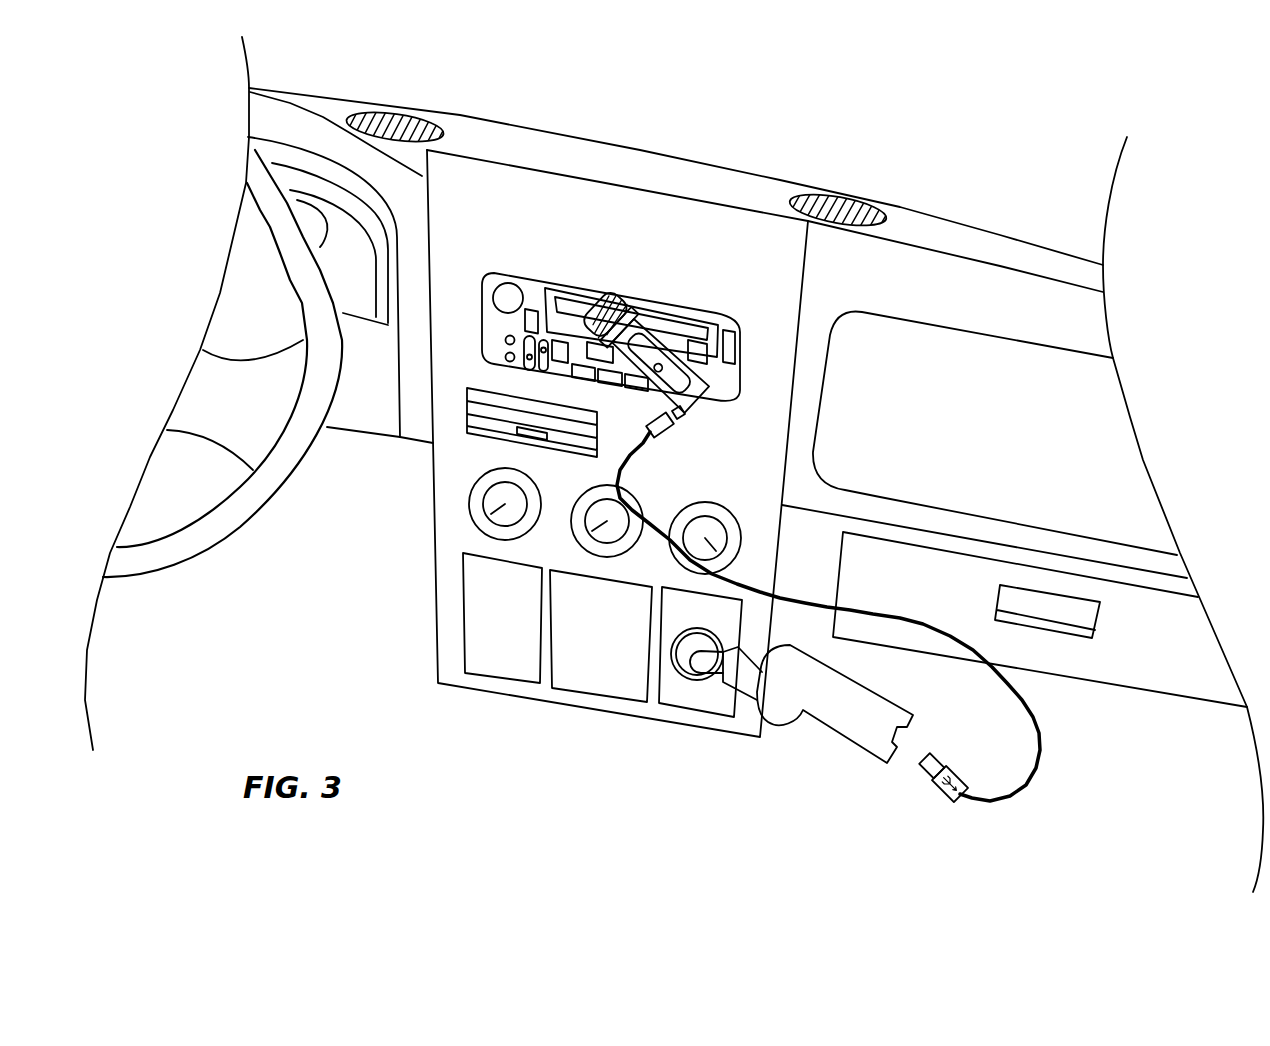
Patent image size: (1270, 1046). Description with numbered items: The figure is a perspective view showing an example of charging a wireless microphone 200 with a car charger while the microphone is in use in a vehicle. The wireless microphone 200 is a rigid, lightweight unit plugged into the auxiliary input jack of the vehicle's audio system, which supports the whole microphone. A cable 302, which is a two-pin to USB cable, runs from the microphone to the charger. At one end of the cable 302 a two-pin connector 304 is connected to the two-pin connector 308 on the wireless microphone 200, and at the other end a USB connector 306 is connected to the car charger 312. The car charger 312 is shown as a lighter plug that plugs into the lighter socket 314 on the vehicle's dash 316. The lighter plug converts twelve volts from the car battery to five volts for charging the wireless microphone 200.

The wireless microphone 200 is at (628, 316).
The cable 302 is at (1030, 797).
The two-pin connector 304 is at (668, 435).
The USB connector 306 is at (938, 797).
The two-pin connector 308 is at (677, 419).
The car charger 312 is at (897, 740).
The lighter socket 314 is at (683, 676).
The dash 316 is at (627, 252).